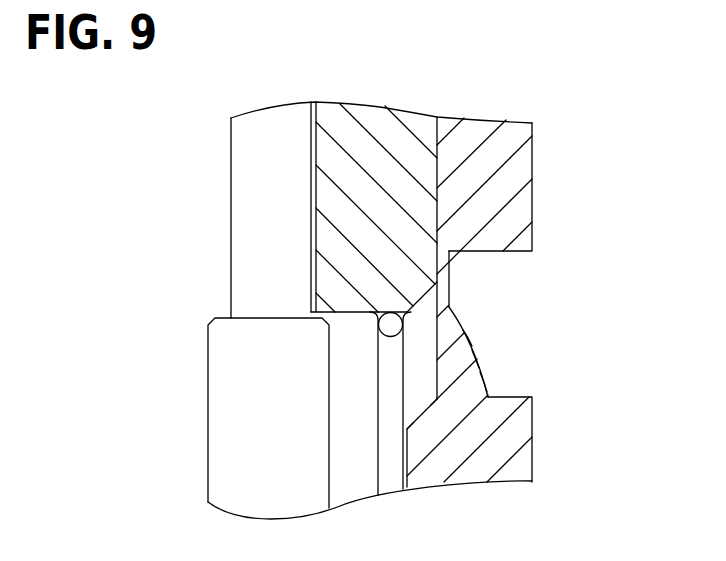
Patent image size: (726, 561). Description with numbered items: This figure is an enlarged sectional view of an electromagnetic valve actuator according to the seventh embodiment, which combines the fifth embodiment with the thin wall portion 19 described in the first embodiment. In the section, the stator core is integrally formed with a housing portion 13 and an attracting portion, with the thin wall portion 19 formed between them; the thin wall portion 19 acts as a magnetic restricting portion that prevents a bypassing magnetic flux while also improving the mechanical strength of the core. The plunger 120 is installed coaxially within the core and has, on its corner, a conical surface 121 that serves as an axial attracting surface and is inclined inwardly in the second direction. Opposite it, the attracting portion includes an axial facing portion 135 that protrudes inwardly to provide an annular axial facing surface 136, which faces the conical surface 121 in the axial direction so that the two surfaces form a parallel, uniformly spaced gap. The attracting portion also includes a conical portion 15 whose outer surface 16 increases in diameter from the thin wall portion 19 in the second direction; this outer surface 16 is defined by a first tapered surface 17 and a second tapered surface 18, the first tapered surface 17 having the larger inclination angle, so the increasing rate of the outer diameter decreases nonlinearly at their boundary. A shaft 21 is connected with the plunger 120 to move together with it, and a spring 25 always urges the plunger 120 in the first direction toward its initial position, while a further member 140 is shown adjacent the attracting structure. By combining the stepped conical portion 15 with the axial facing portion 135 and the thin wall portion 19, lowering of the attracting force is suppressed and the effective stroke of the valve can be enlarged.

The plunger 120 is at (383, 133).
The conical surface 121 is at (428, 296).
The housing portion 13 is at (502, 182).
The thin wall portion 19 is at (441, 271).
The first tapered surface 17 is at (456, 321).
The outer surface 16 is at (470, 345).
The conical portion 15 is at (475, 367).
The second tapered surface 18 is at (483, 383).
The lower housing member 140 is at (505, 453).
The shaft 21 is at (227, 420).
The spring 25 is at (390, 482).
The axial facing surface 136 is at (436, 399).
The axial facing portion 135 is at (425, 418).